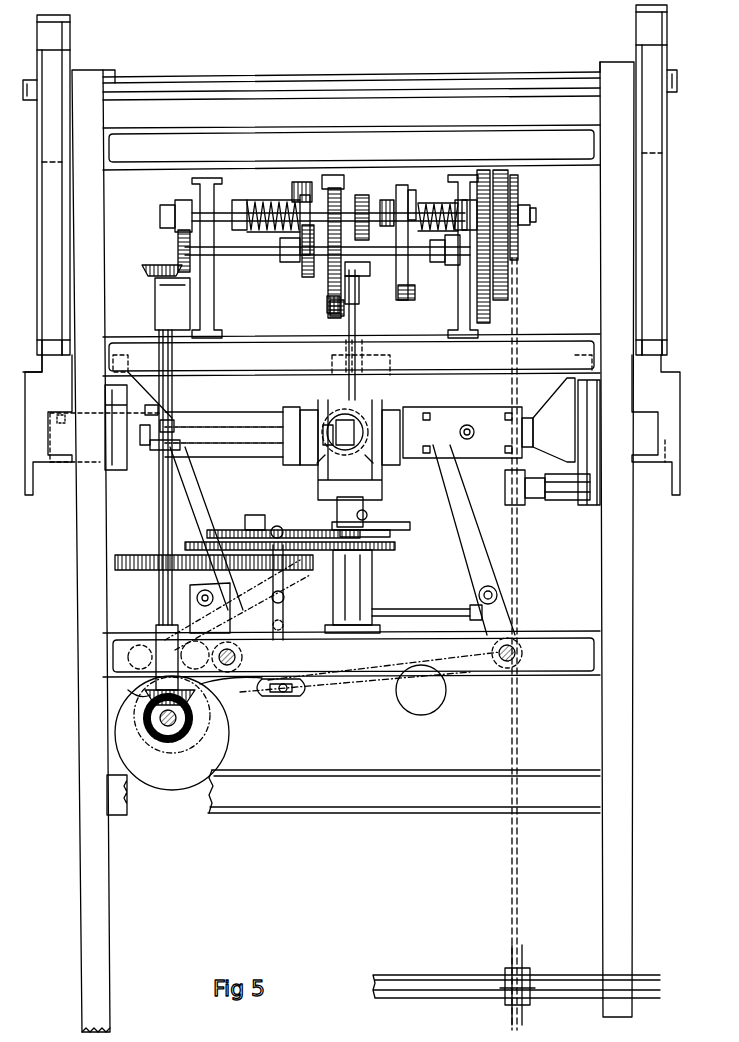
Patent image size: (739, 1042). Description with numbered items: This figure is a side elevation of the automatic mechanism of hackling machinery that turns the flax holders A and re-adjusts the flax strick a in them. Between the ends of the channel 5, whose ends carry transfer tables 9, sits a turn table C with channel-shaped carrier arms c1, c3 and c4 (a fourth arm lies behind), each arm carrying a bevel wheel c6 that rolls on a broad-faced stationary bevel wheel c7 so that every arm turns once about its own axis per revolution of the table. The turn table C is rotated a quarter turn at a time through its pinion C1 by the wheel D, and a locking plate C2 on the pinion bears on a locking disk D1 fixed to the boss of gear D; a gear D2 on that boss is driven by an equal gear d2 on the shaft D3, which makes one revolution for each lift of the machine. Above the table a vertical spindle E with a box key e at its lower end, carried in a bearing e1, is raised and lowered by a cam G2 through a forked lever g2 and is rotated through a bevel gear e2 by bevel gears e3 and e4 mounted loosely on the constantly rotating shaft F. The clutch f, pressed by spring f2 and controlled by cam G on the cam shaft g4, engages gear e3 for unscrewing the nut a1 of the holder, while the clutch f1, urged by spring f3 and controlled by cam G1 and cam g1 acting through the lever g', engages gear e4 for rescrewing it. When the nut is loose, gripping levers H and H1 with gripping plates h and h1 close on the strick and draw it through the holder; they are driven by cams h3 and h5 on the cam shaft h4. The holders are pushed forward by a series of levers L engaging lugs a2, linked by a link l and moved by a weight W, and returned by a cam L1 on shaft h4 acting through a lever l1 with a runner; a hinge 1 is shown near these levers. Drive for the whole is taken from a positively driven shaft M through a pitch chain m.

The channel 5 is at (350, 211).
The flax strick a is at (32, 375).
The flax holder A is at (670, 465).
The transfer table 9 is at (352, 441).
The constantly rotating shaft F is at (352, 254).
The clutch f is at (396, 210).
The clutch f1 is at (292, 199).
The spring f2 is at (427, 209).
The spring f3 is at (262, 212).
The lever g' is at (369, 172).
The box key e is at (375, 297).
The bearing e1 is at (364, 291).
The bevel gear e2 is at (364, 268).
The bevel gear e3 is at (363, 207).
The bevel gear e4 is at (338, 246).
The cam g1 is at (290, 262).
The forked lever g2 is at (330, 316).
The cam shaft g4 is at (200, 280).
The cam G is at (415, 292).
The cam G1 is at (301, 266).
The cam G2 is at (330, 305).
The vertical spindle E is at (359, 335).
The wheel D is at (289, 540).
The locking disk D1 is at (283, 518).
The gear D2 is at (286, 597).
The shaft D3 is at (170, 489).
The gear d2 is at (130, 566).
The gripping plate h is at (170, 423).
The gripping plate h1 is at (366, 516).
The cam h3 is at (232, 710).
The cam shaft h4 is at (148, 738).
The cam h5 is at (128, 692).
The arm c1 is at (448, 412).
The arm c3 is at (224, 427).
The arm c4 is at (324, 423).
The bevel wheel c6 is at (372, 398).
The stationary bevel wheel c7 is at (322, 462).
The turn table C is at (374, 412).
The pinion C1 is at (375, 524).
The locking plate C2 is at (410, 530).
The nut a1 is at (476, 424).
The lug a2 is at (465, 433).
The gripping lever H is at (196, 495).
The gripping lever H1 is at (325, 565).
The lever L is at (158, 522).
The cam L1 is at (172, 733).
The link l is at (384, 612).
The lever l1 is at (178, 702).
The hinge 1 is at (245, 608).
The weight W is at (421, 690).
The pitch chain m is at (525, 644).
The positively driven shaft M is at (415, 986).